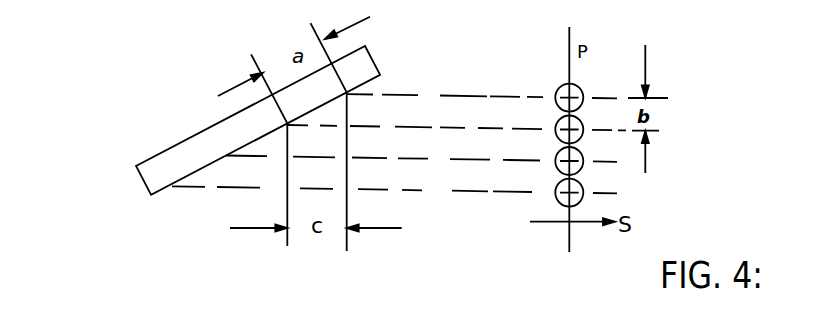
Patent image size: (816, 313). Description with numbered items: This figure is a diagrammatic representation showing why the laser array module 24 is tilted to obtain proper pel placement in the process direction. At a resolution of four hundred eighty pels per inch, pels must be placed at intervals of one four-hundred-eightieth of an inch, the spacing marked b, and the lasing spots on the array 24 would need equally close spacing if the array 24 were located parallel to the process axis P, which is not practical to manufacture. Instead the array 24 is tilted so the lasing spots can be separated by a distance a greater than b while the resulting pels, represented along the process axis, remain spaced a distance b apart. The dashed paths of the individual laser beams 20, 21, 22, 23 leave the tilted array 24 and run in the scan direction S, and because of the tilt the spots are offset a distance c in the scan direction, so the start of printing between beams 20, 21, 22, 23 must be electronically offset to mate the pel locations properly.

The laser beam 20 is at (428, 94).
The laser beam 21 is at (428, 127).
The laser beam 22 is at (428, 159).
The laser beam 23 is at (424, 190).
The laser array module 24 is at (194, 139).